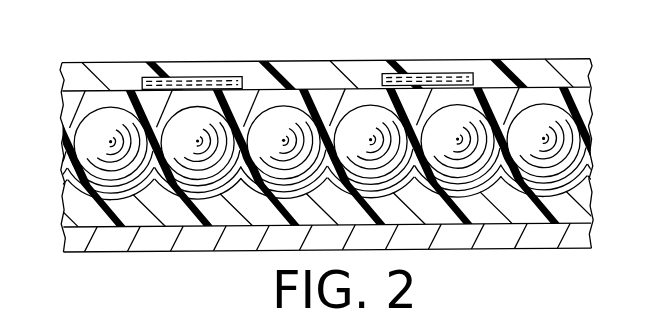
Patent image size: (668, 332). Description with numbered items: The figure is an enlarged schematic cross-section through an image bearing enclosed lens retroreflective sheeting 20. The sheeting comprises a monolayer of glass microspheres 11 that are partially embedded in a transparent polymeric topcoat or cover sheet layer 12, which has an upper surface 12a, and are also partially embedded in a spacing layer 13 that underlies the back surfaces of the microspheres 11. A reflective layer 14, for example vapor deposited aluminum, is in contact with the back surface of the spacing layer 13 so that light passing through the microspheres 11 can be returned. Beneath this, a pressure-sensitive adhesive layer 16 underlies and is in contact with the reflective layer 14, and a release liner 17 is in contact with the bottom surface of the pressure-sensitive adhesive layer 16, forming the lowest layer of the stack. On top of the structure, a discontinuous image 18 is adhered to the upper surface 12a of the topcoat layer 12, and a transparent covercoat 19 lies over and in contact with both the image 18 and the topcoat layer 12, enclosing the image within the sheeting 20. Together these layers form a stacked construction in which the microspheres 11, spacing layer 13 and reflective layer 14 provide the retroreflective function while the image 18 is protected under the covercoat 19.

The retroreflective sheeting 20 is at (77, 62).
The transparent covercoat 19 is at (565, 62).
The discontinuous image 18 is at (212, 77).
The upper surface 12a is at (582, 78).
The topcoat layer 12 is at (592, 99).
The glass microspheres 11 is at (545, 127).
The spacing layer 13 is at (583, 150).
The reflective layer 14 is at (571, 196).
The pressure-sensitive adhesive layer 16 is at (573, 210).
The release liner 17 is at (573, 235).